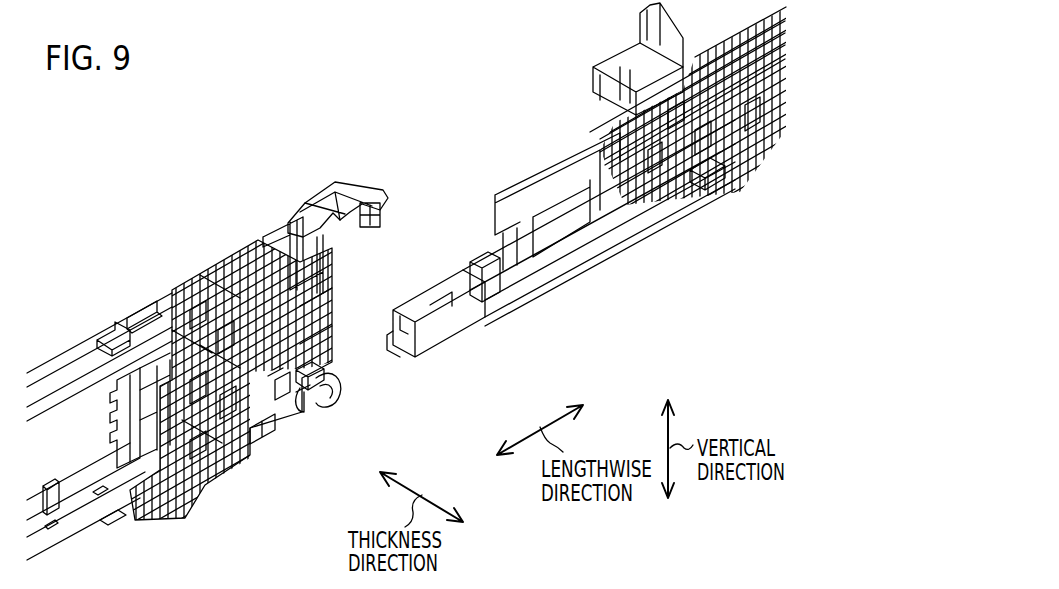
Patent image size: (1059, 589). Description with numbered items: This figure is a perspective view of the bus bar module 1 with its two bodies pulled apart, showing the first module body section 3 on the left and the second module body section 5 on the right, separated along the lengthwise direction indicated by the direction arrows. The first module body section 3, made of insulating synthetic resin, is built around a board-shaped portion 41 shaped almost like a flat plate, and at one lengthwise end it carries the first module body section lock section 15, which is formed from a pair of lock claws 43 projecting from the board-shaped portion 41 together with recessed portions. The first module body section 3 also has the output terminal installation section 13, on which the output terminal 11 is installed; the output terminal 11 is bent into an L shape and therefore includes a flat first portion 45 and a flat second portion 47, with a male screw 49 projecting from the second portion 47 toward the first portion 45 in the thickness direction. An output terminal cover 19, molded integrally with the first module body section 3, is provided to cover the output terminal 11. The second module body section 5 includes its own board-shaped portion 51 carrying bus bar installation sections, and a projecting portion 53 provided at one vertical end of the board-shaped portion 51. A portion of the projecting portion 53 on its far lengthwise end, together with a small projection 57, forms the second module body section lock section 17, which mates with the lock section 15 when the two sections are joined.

The bus bar module 1 is at (390, 100).
The first module body section 3 is at (62, 363).
The second module body section 5 is at (680, 58).
The output terminal 11 is at (310, 384).
The output terminal installation section 13 is at (325, 400).
The first module body section lock section 15 is at (262, 443).
The second module body section lock section 17 is at (418, 381).
The output terminal cover 19 is at (342, 195).
The board-shaped portion 41 is at (124, 350).
The lock claws 43 is at (236, 404).
The first portion 45 is at (280, 345).
The second portion 47 is at (277, 383).
The male screw 49 is at (310, 382).
The board-shaped portion 51 is at (700, 177).
The projecting portion 53 is at (468, 320).
The small projection 57 is at (478, 258).